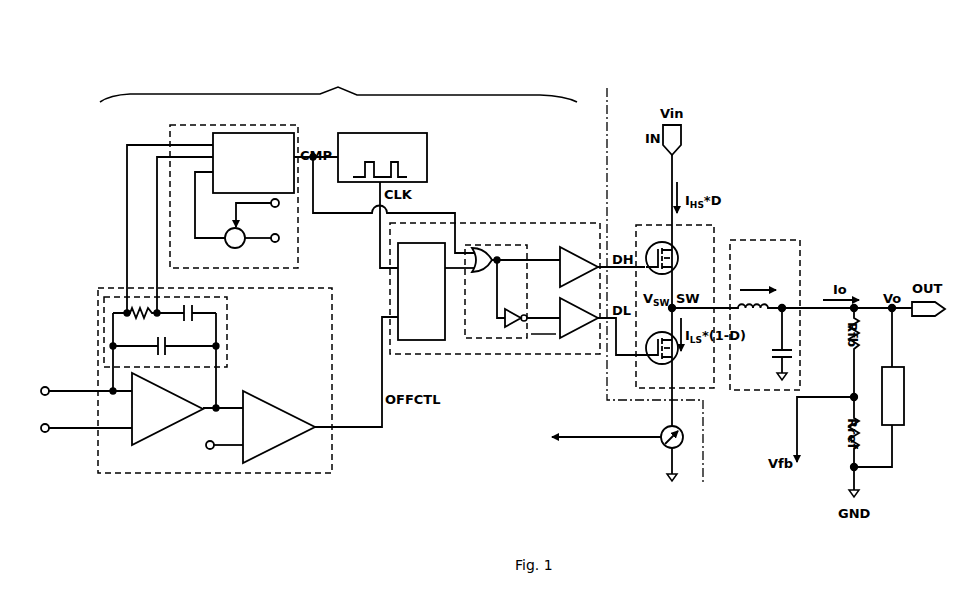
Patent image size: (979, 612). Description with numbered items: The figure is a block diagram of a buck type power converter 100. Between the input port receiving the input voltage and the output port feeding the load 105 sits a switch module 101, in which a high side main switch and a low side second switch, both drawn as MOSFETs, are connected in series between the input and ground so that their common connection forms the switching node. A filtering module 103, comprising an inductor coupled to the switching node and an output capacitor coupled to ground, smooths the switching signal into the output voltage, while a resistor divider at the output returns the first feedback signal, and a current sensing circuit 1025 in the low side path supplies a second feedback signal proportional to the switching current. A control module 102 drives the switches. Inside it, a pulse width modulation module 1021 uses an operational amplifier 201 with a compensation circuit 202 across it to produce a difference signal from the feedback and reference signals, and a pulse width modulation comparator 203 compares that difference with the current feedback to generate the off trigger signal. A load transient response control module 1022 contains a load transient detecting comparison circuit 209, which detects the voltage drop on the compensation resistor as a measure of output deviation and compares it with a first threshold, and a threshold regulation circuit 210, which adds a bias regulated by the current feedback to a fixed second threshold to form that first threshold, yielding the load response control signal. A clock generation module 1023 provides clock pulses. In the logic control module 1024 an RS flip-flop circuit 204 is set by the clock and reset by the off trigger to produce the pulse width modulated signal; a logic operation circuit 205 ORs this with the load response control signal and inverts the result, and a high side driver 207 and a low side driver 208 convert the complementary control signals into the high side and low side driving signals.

The power converter 100 is at (87, 60).
The switch module 101 is at (637, 226).
The control module 102 is at (338, 86).
The filtering module 103 is at (736, 315).
The load 105 is at (904, 410).
The operational amplifier 201 is at (167, 409).
The compensation circuit 202 is at (229, 334).
The PWM comparator 203 is at (279, 427).
The RS flip-flop 204 is at (421, 291).
The logic operation circuit 205 is at (500, 248).
The high side driver 207 is at (579, 267).
The low side driver 208 is at (579, 318).
The load transient detecting comparison circuit 209 is at (253, 163).
The threshold regulation circuit 210 is at (226, 229).
The PWM module 1021 is at (295, 291).
The load transient response control module 1022 is at (258, 128).
The clock generation module 1023 is at (373, 132).
The logic control module 1024 is at (557, 223).
The current sensing circuit 1025 is at (663, 429).